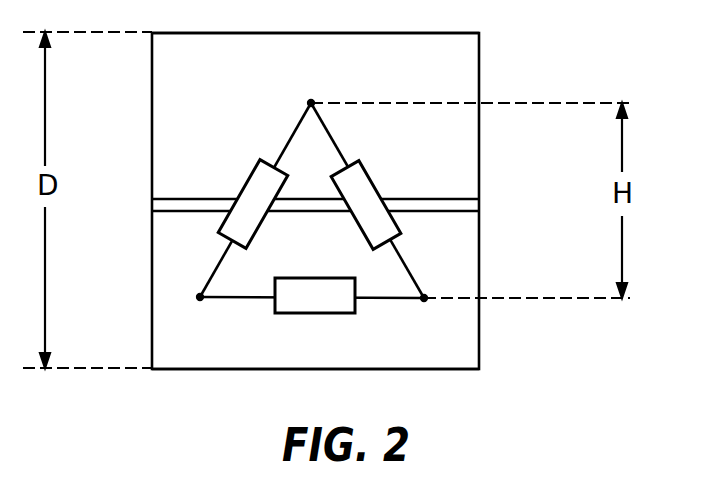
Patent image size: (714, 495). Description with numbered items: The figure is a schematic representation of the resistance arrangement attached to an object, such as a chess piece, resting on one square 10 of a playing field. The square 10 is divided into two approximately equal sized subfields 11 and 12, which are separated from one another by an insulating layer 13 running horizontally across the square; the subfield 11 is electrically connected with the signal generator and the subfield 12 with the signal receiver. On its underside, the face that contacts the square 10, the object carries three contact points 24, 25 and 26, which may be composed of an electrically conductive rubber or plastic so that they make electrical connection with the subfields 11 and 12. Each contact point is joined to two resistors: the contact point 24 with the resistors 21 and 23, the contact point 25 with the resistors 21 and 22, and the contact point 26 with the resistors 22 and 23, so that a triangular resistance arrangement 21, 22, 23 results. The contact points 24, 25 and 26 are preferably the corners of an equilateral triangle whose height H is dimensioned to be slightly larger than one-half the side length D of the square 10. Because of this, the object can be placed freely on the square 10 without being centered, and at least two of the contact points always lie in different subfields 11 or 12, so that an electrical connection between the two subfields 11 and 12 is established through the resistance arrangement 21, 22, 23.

The square 10 is at (543, 66).
The subfield 11 is at (462, 52).
The subfield 12 is at (479, 357).
The insulating layer 13 is at (472, 204).
The resistor 21 is at (368, 193).
The resistor 22 is at (312, 303).
The resistor 23 is at (250, 176).
The contact point 24 is at (311, 103).
The contact point 25 is at (424, 298).
The contact point 26 is at (200, 297).